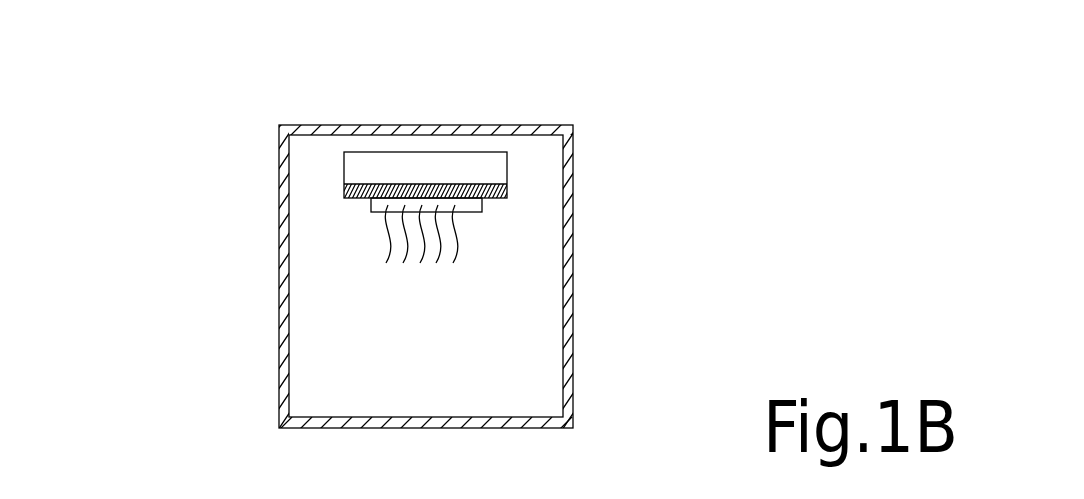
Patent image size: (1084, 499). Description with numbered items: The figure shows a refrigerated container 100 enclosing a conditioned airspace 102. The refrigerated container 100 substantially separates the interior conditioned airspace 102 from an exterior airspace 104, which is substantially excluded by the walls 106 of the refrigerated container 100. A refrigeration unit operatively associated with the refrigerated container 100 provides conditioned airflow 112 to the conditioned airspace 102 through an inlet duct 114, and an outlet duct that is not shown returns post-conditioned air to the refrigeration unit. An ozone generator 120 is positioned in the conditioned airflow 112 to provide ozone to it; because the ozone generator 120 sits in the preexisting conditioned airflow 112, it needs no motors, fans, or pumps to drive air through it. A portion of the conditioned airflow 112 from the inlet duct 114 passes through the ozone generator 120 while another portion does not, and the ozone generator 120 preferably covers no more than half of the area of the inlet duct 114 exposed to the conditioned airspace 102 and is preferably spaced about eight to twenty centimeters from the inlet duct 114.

The refrigerated container 100 is at (186, 124).
The conditioned airspace 102 is at (517, 383).
The exterior airspace 104 is at (242, 370).
The walls 106 is at (352, 125).
The conditioned airflow 112 is at (387, 252).
The inlet duct 114 is at (472, 213).
The ozone generator 120 is at (507, 163).